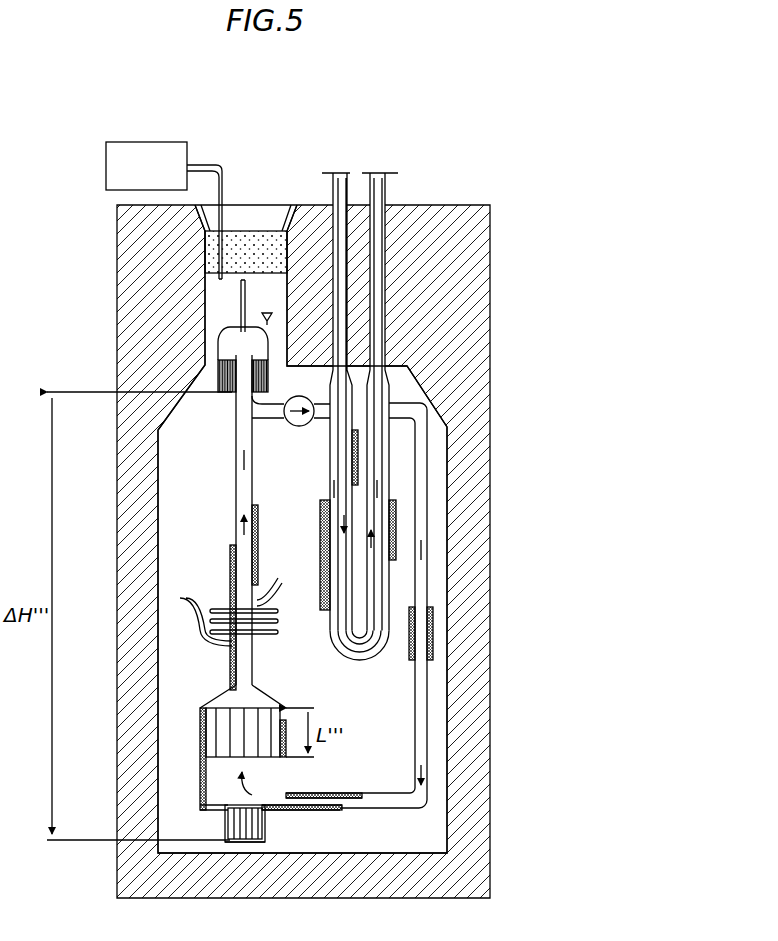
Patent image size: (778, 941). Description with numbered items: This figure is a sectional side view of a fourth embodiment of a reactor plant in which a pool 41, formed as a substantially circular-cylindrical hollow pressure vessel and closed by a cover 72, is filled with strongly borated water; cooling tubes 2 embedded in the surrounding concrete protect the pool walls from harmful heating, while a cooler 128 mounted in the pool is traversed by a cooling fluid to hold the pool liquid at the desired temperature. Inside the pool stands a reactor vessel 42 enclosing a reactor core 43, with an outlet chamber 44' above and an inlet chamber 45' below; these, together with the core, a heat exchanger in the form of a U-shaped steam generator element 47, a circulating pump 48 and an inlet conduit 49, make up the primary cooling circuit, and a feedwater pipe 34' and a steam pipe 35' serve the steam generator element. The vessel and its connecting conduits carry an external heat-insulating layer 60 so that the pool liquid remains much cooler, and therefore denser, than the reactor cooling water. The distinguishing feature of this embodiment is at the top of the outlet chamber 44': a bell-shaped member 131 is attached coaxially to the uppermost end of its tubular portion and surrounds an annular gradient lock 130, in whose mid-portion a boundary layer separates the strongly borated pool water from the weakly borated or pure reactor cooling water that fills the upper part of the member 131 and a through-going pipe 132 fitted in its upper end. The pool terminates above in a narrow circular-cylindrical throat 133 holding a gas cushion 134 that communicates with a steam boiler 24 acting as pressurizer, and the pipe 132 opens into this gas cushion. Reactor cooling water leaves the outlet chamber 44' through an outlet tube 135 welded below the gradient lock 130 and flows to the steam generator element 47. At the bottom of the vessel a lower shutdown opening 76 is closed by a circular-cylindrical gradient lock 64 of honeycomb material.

The cooling tubes 2 is at (453, 648).
The steam boiler 24 is at (158, 152).
The feedwater pipe 34' is at (364, 390).
The steam pipe 35' is at (335, 376).
The pool 41 is at (170, 545).
The reactor vessel 42 is at (228, 673).
The reactor core 43 is at (216, 730).
The outlet chamber 44' is at (221, 522).
The inlet chamber 45' is at (281, 787).
The steam generator element 47 is at (322, 479).
The circulating pump 48 is at (300, 427).
The inlet conduit 49 is at (415, 698).
The heat-insulating layer 60 is at (318, 544).
The gradient lock 64 is at (238, 819).
The cover 72 is at (250, 236).
The lower shutdown opening 76 is at (250, 846).
The cooler 128 is at (278, 630).
The gradient lock 130 is at (222, 392).
The bell-shaped member 131 is at (222, 350).
The through-going pipe 132 is at (241, 290).
The throat 133 is at (285, 304).
The gas cushion 134 is at (208, 275).
The outlet tube 135 is at (273, 420).